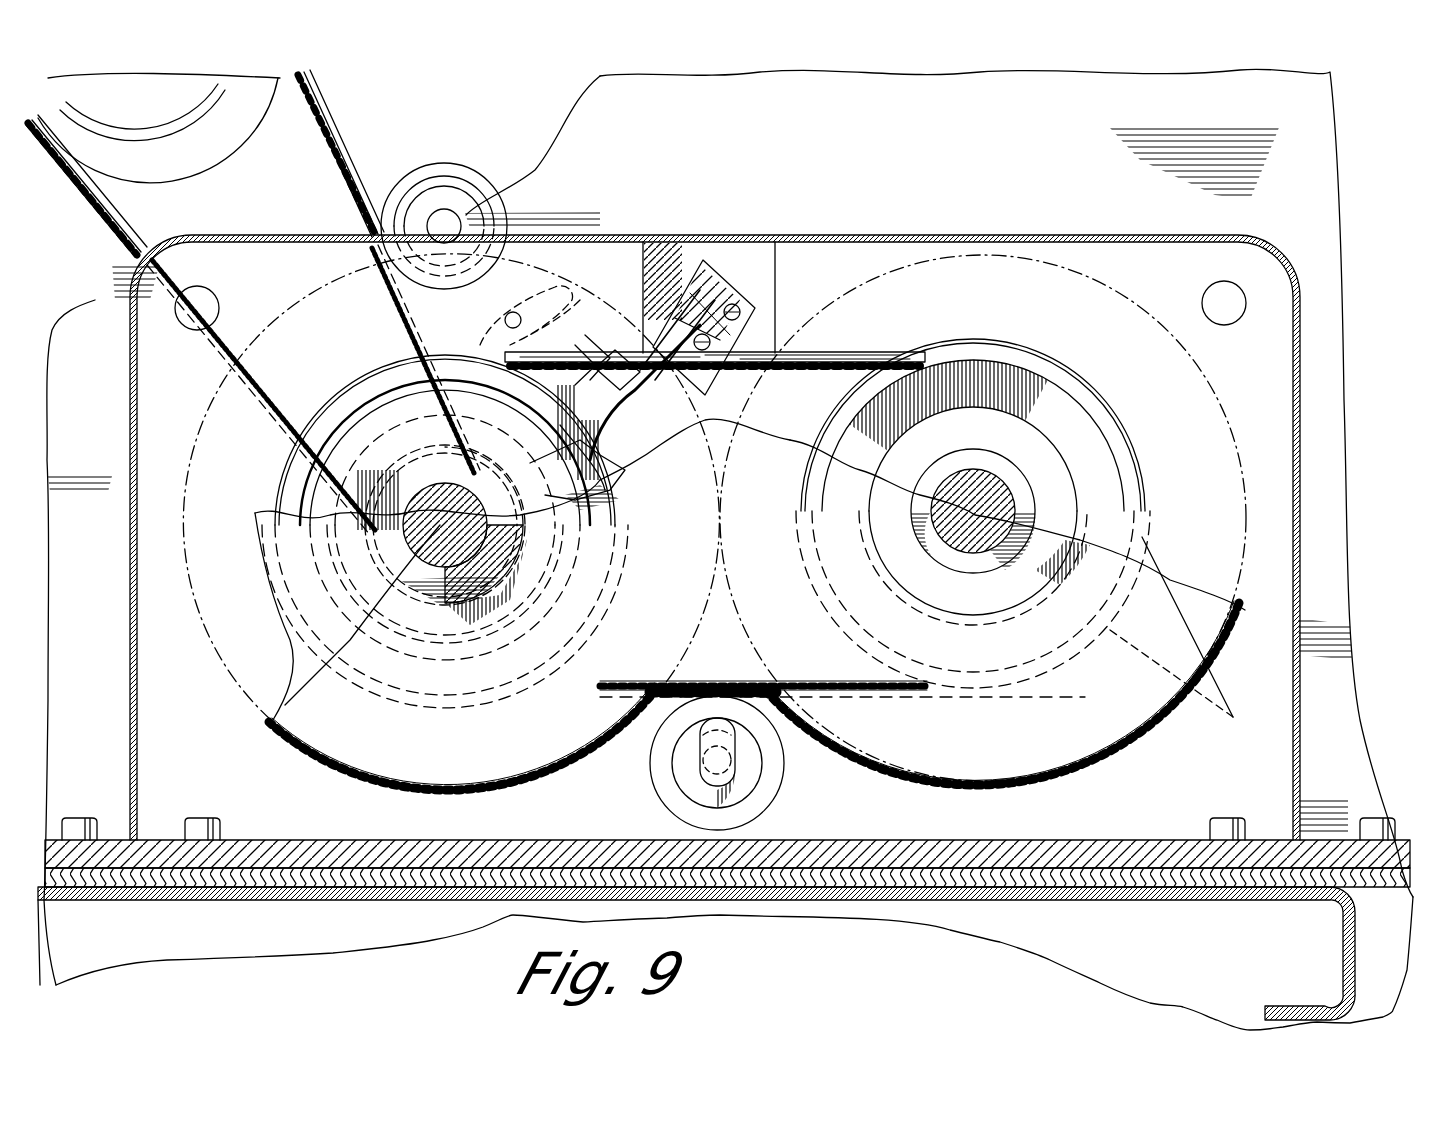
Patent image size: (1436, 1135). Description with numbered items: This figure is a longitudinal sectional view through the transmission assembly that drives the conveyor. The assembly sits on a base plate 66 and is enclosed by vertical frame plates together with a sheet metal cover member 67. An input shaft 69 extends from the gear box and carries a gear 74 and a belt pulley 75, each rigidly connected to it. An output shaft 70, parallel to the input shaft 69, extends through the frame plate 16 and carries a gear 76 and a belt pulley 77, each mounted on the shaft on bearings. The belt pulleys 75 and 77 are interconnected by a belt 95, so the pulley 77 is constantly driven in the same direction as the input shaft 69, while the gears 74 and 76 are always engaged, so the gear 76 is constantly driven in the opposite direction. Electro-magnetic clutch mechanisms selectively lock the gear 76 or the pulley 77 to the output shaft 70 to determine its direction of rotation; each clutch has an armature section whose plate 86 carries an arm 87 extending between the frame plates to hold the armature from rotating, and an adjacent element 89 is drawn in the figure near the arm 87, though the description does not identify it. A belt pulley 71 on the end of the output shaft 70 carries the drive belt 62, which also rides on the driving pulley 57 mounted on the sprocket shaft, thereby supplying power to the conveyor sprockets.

The frame plate 16 is at (88, 306).
The driving pulley 57 is at (205, 155).
The belt 62 is at (342, 140).
The base plate 66 is at (112, 838).
The sheet metal cover member 67 is at (1250, 235).
The input shaft 69 is at (1000, 477).
The output shaft 70 is at (415, 490).
The belt pulley 71 is at (280, 485).
The gear 74 is at (1125, 735).
The belt pulley 75 is at (1230, 712).
The gear 76 is at (552, 745).
The belt pulley 77 is at (370, 385).
The plate 86 is at (533, 465).
The arm 87 is at (580, 330).
The latch block 89 is at (712, 300).
The belt 95 is at (838, 353).